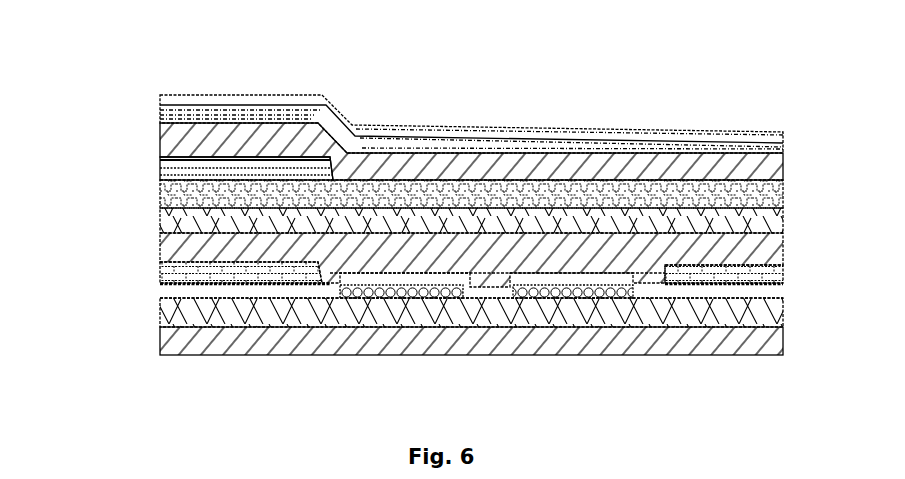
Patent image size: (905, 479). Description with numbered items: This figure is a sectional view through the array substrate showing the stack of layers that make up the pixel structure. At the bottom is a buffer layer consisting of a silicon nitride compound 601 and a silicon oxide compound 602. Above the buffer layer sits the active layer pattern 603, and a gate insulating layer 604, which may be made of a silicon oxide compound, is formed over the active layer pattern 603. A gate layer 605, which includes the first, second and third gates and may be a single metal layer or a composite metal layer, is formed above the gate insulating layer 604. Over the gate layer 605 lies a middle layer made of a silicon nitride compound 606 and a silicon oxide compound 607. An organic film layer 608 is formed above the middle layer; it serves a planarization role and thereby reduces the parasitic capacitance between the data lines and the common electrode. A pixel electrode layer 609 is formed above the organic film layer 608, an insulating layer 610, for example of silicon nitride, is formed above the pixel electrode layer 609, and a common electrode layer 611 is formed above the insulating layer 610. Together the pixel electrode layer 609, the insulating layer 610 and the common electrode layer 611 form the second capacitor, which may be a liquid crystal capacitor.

The silicon nitride compound 601 is at (160, 345).
The silicon oxide compound 602 is at (160, 314).
The active layer pattern 603 is at (530, 300).
The gate insulating layer 604 is at (160, 295).
The gate layer 605 is at (160, 279).
The silicon nitride compound 606 is at (160, 252).
The silicon oxide compound 607 is at (160, 224).
The organic film layer 608 is at (160, 193).
The pixel electrode layer 609 is at (160, 173).
The insulating layer 610 is at (160, 145).
The common electrode layer 611 is at (160, 113).